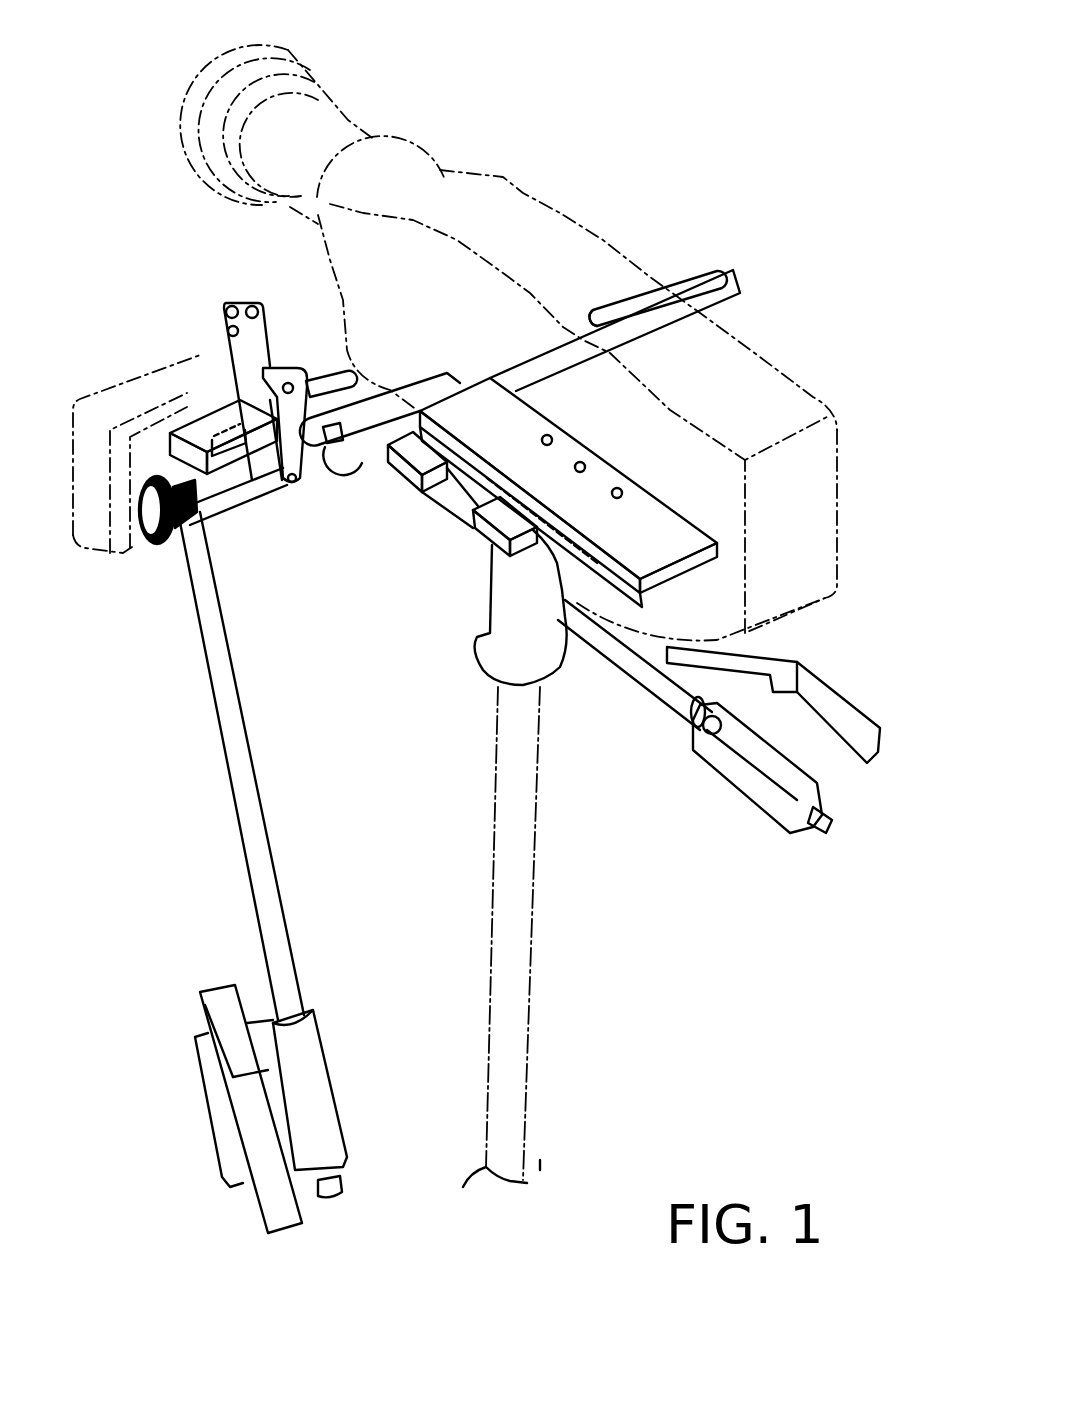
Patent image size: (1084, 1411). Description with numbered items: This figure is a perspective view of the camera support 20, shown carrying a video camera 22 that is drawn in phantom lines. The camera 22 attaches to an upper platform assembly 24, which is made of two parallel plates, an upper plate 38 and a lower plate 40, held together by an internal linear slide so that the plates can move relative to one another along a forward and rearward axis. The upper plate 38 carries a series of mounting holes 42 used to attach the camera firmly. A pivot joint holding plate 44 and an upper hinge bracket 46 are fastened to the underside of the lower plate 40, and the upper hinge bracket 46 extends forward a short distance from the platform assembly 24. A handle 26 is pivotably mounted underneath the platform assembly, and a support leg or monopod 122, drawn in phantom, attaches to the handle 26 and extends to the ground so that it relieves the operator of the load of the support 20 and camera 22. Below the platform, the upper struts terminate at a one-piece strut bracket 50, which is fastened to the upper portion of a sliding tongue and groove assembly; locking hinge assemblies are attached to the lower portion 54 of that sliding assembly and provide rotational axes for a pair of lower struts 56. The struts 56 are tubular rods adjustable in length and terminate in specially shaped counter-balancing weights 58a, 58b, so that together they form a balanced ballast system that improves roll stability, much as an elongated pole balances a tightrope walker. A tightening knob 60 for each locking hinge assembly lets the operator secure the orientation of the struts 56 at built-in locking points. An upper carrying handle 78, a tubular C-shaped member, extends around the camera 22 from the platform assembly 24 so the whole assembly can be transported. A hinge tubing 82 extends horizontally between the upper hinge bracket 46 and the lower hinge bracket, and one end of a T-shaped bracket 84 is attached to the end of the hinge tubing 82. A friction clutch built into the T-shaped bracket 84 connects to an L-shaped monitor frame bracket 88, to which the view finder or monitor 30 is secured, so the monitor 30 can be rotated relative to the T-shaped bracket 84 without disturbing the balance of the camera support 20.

The camera support 20 is at (520, 150).
The video camera 22 is at (408, 182).
The upper platform assembly 24 is at (497, 403).
The handle 26 is at (547, 653).
The monitor 30 is at (92, 523).
The upper plate 38 is at (683, 563).
The lower plate 40 is at (447, 453).
The mounting holes 42 is at (621, 494).
The pivot joint holding plate 44 is at (483, 530).
The upper hinge bracket 46 is at (407, 467).
The strut bracket 50 is at (226, 398).
The lower portion 54 is at (220, 407).
The lower struts 56 is at (227, 750).
The counter-balancing weight 58a is at (227, 1020).
The counter-balancing weight 58b is at (823, 755).
The tightening knob 60 is at (155, 540).
The upper carrying handle 78 is at (725, 275).
The hinge tubing 82 is at (323, 447).
The T-shaped bracket 84 is at (253, 348).
The monitor frame bracket 88 is at (289, 470).
The monopod 122 is at (513, 817).